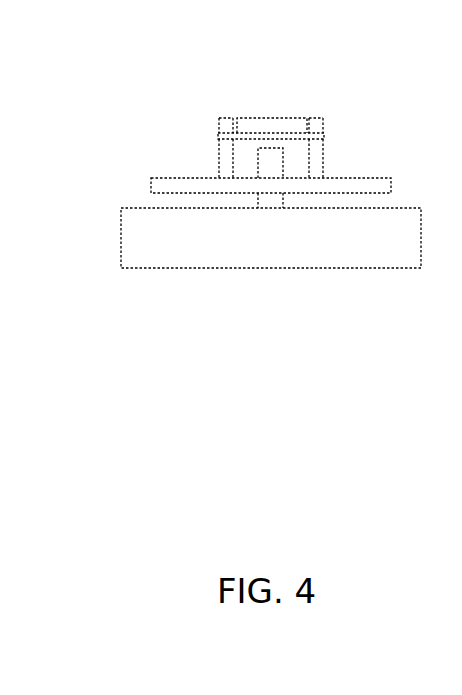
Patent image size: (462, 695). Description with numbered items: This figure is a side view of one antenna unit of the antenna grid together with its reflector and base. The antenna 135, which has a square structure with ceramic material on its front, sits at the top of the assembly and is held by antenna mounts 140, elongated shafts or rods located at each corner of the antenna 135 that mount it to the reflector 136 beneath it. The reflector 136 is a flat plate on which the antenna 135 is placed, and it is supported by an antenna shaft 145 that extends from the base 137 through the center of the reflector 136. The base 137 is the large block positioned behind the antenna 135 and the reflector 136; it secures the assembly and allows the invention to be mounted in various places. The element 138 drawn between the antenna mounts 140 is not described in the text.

The antenna 135 is at (323, 136).
The reflector 136 is at (158, 185).
The base 137 is at (122, 263).
The cap 138 is at (270, 118).
The antenna mount 140 is at (223, 118).
The antenna shaft 145 is at (273, 169).